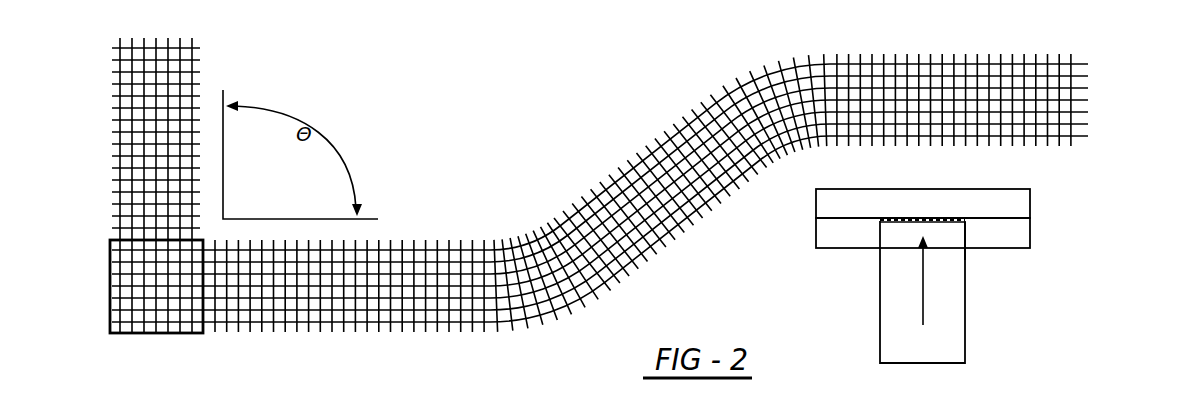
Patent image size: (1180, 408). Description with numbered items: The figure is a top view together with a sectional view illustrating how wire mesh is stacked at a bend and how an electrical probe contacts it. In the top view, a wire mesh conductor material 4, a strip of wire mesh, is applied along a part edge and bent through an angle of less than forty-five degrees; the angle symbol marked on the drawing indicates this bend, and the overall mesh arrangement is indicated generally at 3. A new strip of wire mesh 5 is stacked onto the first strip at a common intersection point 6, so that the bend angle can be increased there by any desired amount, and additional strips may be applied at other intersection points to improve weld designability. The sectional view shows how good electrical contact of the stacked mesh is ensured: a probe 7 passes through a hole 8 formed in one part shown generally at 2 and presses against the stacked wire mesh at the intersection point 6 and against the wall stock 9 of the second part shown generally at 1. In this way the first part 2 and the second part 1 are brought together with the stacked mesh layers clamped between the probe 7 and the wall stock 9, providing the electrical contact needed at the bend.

The second part 1 is at (1020, 202).
The one part 2 is at (1020, 232).
The mesh fabric 3 is at (447, 113).
The wire mesh conductor material 4 is at (1085, 98).
The new strip of wire mesh 5 is at (113, 126).
The common intersection point 6 is at (125, 333).
The probe 7 is at (965, 312).
The hole 8 is at (963, 235).
The wall stock 9 is at (955, 218).